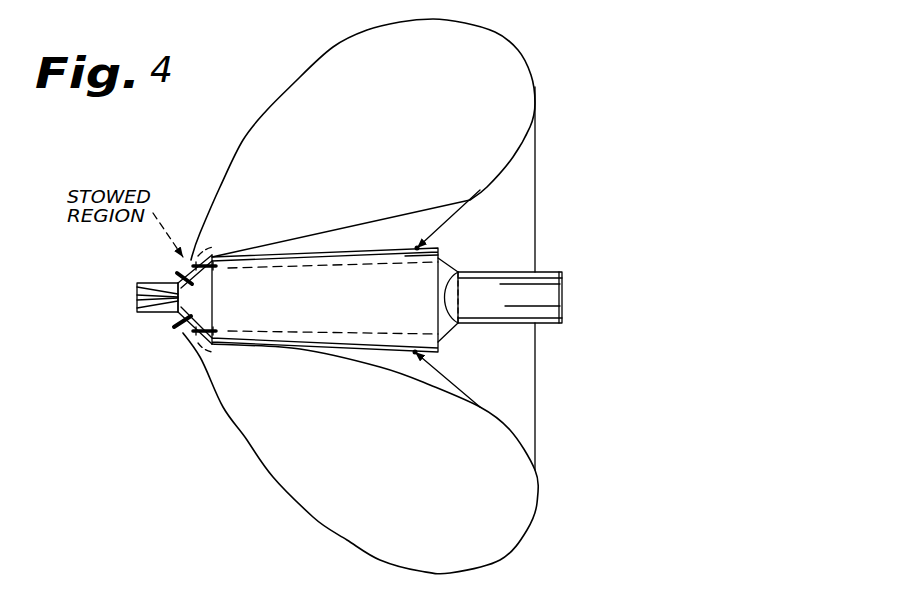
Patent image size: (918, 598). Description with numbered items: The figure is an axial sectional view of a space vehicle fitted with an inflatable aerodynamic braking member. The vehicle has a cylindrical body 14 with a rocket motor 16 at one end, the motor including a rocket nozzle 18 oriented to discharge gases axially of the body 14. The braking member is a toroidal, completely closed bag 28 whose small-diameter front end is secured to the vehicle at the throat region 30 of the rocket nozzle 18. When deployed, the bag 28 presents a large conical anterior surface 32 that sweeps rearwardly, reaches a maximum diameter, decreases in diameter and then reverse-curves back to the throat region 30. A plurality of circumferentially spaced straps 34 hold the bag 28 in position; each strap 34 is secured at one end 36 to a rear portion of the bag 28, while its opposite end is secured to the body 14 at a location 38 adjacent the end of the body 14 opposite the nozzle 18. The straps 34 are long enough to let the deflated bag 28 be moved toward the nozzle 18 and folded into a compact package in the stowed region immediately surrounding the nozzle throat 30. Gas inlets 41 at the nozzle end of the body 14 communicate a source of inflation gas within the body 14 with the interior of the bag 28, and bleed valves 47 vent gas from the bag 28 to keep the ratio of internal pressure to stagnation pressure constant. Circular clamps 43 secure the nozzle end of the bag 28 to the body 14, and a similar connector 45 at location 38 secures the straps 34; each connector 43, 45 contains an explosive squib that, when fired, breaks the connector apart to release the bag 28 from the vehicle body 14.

The body 14 is at (368, 248).
The rocket motor 16 is at (170, 352).
The rocket nozzle 18 is at (137, 313).
The bag member 28 is at (226, 440).
The throat region 30 is at (137, 295).
The anterior surface 32 is at (278, 100).
The strap 34 is at (448, 219).
The strap end 36 is at (536, 106).
The location 38 is at (417, 257).
The gas inlet 41 is at (217, 268).
The clamp 43 is at (176, 284).
The connector 45 is at (418, 247).
The bleed valve 47 is at (177, 272).